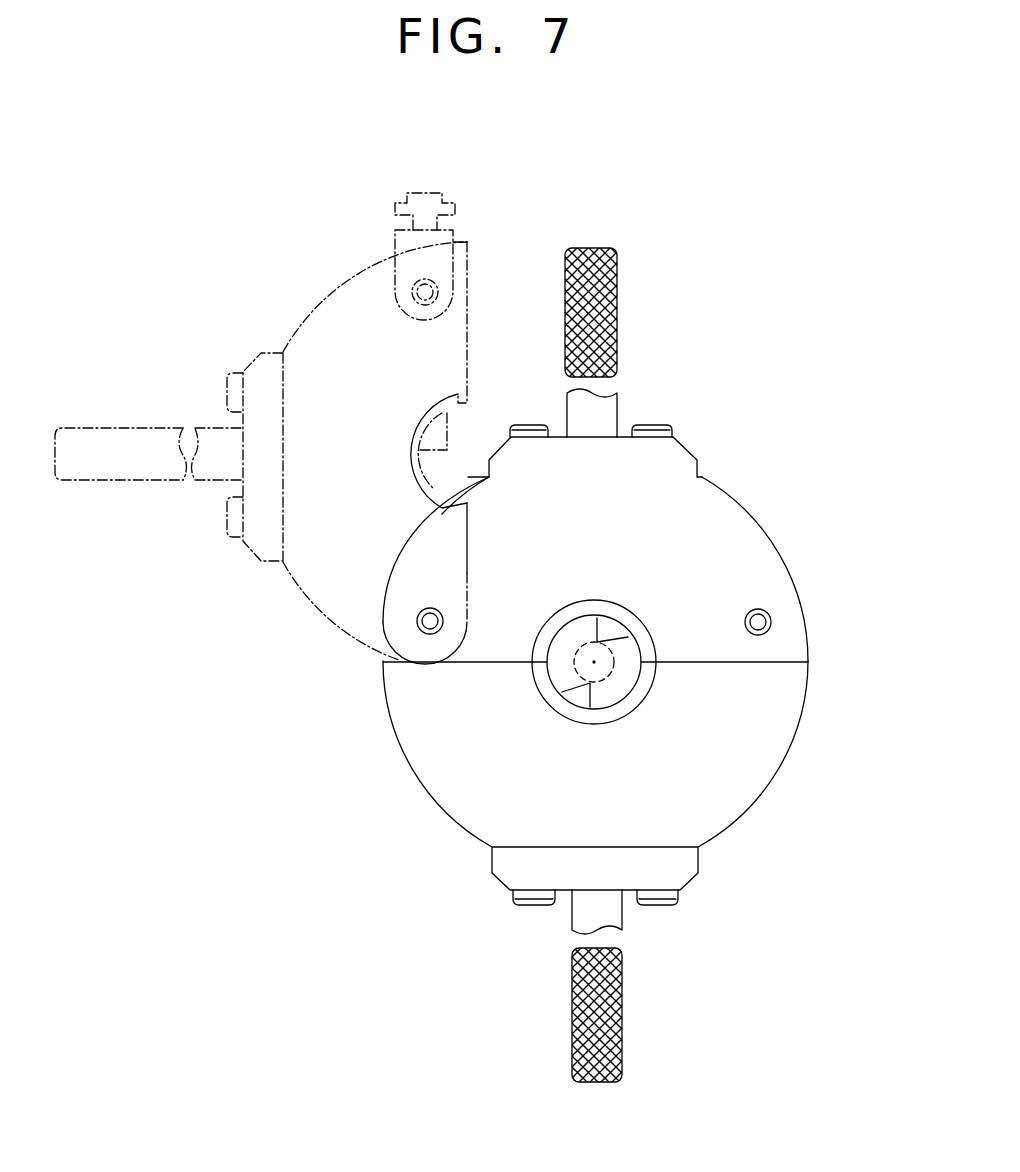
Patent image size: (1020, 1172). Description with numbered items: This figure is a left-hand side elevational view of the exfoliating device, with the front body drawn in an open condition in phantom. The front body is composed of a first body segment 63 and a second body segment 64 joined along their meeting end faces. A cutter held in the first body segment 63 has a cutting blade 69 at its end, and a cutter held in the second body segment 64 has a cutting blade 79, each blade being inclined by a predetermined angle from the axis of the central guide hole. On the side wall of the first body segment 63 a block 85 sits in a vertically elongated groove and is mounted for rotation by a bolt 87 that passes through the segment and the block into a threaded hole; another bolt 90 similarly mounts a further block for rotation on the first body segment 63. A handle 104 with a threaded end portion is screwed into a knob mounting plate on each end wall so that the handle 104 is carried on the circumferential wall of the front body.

The first body segment 63 is at (313, 315).
The second body segment 64 is at (760, 802).
The cutting blade 69 is at (610, 630).
The cutting blade 79 is at (579, 698).
The block 85 is at (450, 232).
The bolt 87 is at (770, 621).
The bolt 90 is at (418, 624).
The handle 104 is at (617, 298).